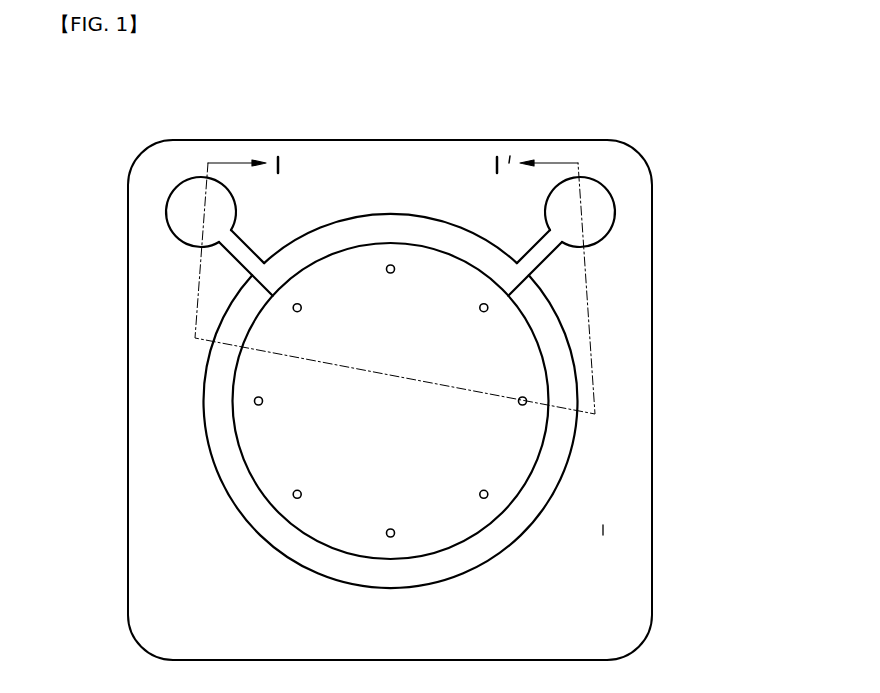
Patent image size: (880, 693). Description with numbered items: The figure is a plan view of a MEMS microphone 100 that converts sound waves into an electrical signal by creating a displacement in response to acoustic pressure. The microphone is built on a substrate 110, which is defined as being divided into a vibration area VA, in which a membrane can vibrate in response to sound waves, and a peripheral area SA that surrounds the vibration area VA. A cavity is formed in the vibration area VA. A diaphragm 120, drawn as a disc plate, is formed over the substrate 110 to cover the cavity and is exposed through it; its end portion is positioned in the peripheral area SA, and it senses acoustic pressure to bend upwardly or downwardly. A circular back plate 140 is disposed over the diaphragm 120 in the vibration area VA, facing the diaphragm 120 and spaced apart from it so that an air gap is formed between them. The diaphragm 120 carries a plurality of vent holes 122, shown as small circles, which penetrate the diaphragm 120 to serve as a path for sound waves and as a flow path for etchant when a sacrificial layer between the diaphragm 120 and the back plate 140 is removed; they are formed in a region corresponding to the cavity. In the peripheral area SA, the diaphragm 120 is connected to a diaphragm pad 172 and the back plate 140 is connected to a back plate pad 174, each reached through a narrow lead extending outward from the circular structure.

The MEMS microphone 100 is at (471, 133).
The substrate 110 is at (653, 285).
The diaphragm 120 is at (207, 435).
The vent holes 122 is at (527, 400).
The back plate 140 is at (233, 390).
The diaphragm pad 172 is at (602, 230).
The back plate pad 174 is at (182, 233).
The vibration area VA is at (279, 489).
The peripheral area SA is at (603, 530).